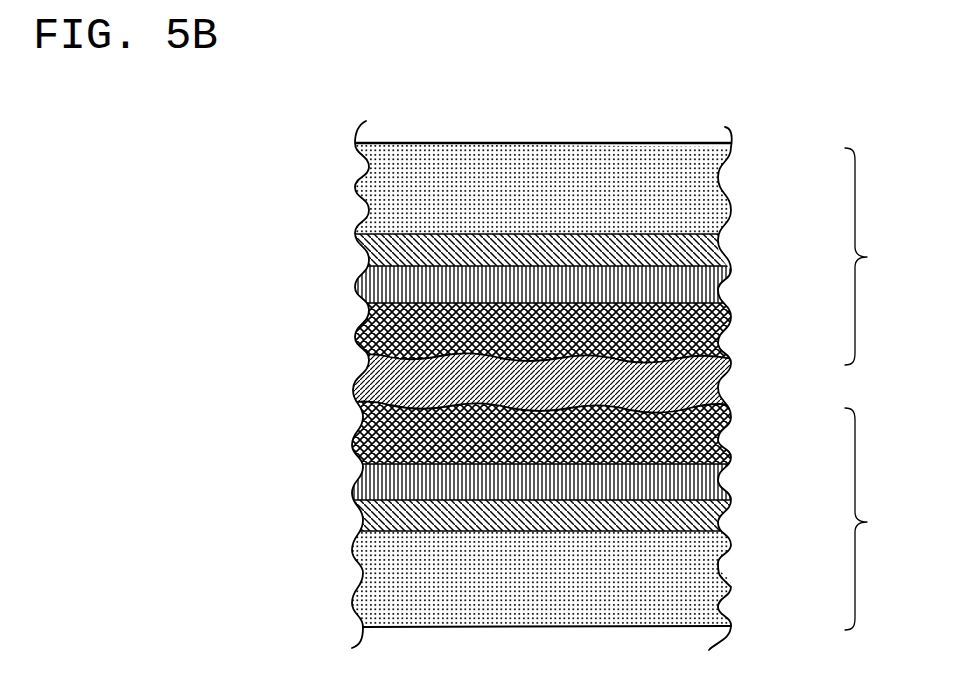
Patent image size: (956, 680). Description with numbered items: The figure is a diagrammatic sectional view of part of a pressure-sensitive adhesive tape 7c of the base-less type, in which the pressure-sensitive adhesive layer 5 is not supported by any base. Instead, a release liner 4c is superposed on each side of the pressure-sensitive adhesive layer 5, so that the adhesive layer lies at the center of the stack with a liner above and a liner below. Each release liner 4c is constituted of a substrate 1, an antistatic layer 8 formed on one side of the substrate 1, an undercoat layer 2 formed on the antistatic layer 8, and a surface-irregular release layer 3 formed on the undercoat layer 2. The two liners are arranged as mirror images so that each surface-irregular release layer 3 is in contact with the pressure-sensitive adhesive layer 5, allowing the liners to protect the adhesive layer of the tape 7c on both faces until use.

The substrate 1 is at (703, 192).
The antistatic layer 8 is at (728, 258).
The undercoat layer 2 is at (727, 290).
The surface-irregular release layer 3 is at (727, 335).
The pressure-sensitive adhesive layer 5 is at (370, 383).
The pressure-sensitive adhesive tape 7c is at (611, 131).
The release liner 4c is at (875, 389).